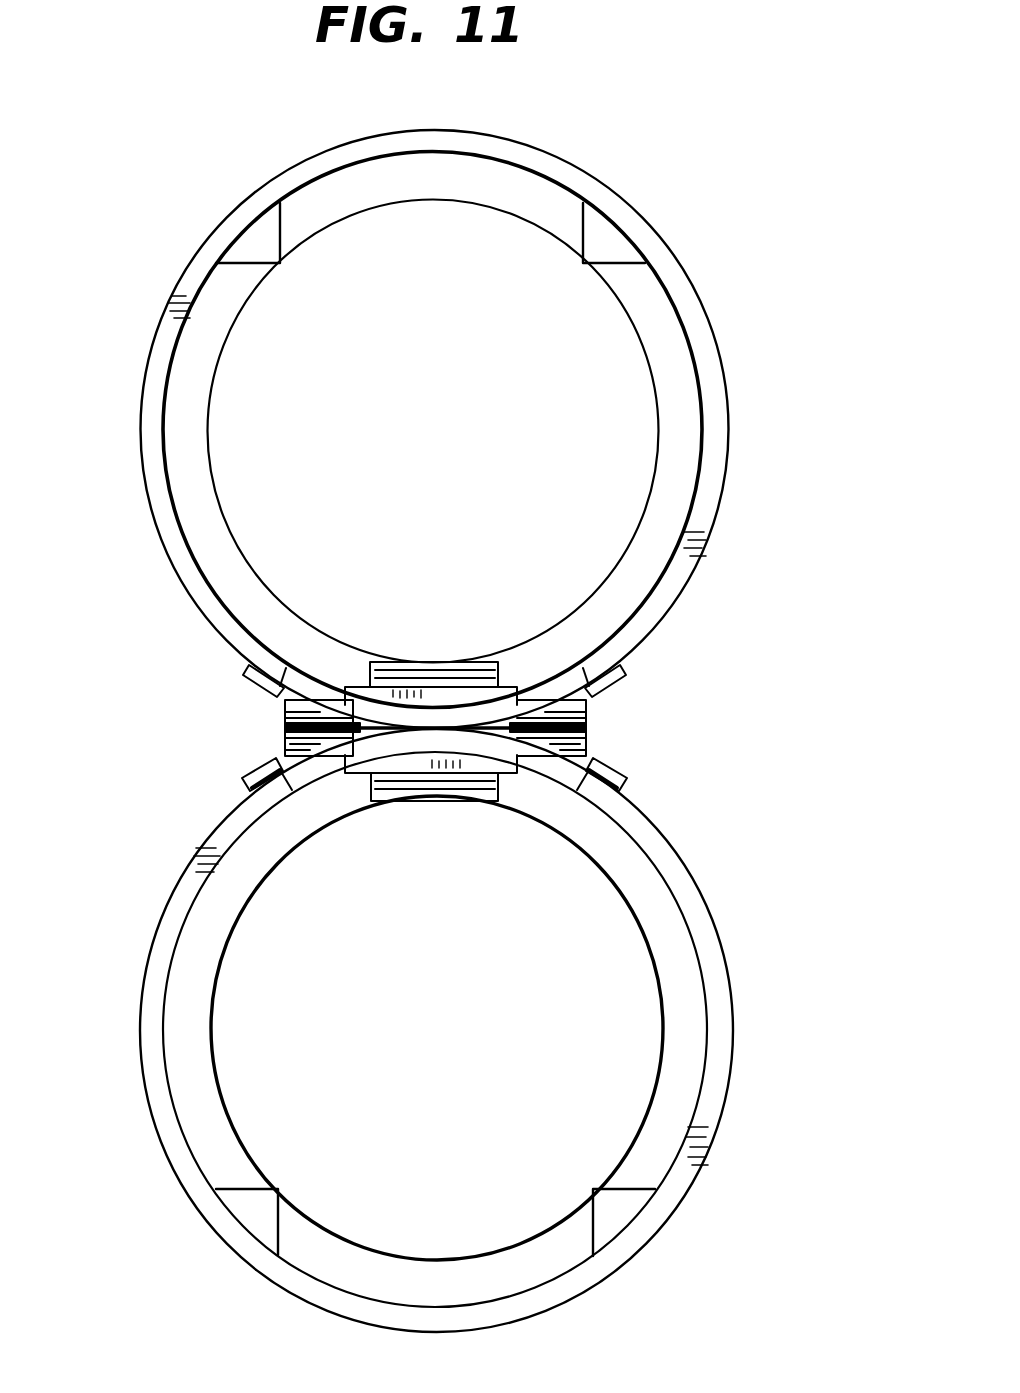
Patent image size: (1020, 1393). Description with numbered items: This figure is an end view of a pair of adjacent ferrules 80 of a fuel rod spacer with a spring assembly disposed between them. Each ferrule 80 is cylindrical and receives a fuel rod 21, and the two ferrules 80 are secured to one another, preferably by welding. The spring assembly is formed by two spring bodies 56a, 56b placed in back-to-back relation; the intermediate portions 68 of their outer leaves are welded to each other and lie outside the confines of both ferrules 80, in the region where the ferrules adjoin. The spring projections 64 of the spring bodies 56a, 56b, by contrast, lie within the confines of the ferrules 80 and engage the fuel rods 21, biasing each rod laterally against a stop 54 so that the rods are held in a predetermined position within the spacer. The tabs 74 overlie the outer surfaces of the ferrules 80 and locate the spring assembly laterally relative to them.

The ferrule 80 is at (718, 347).
The stop 54 is at (580, 218).
The fuel rod 21 is at (213, 381).
The spring projection 64 is at (424, 672).
The intermediate portion 68 is at (285, 711).
The spring body 56a is at (588, 709).
The spring body 56b is at (588, 744).
The tab 74 is at (256, 771).